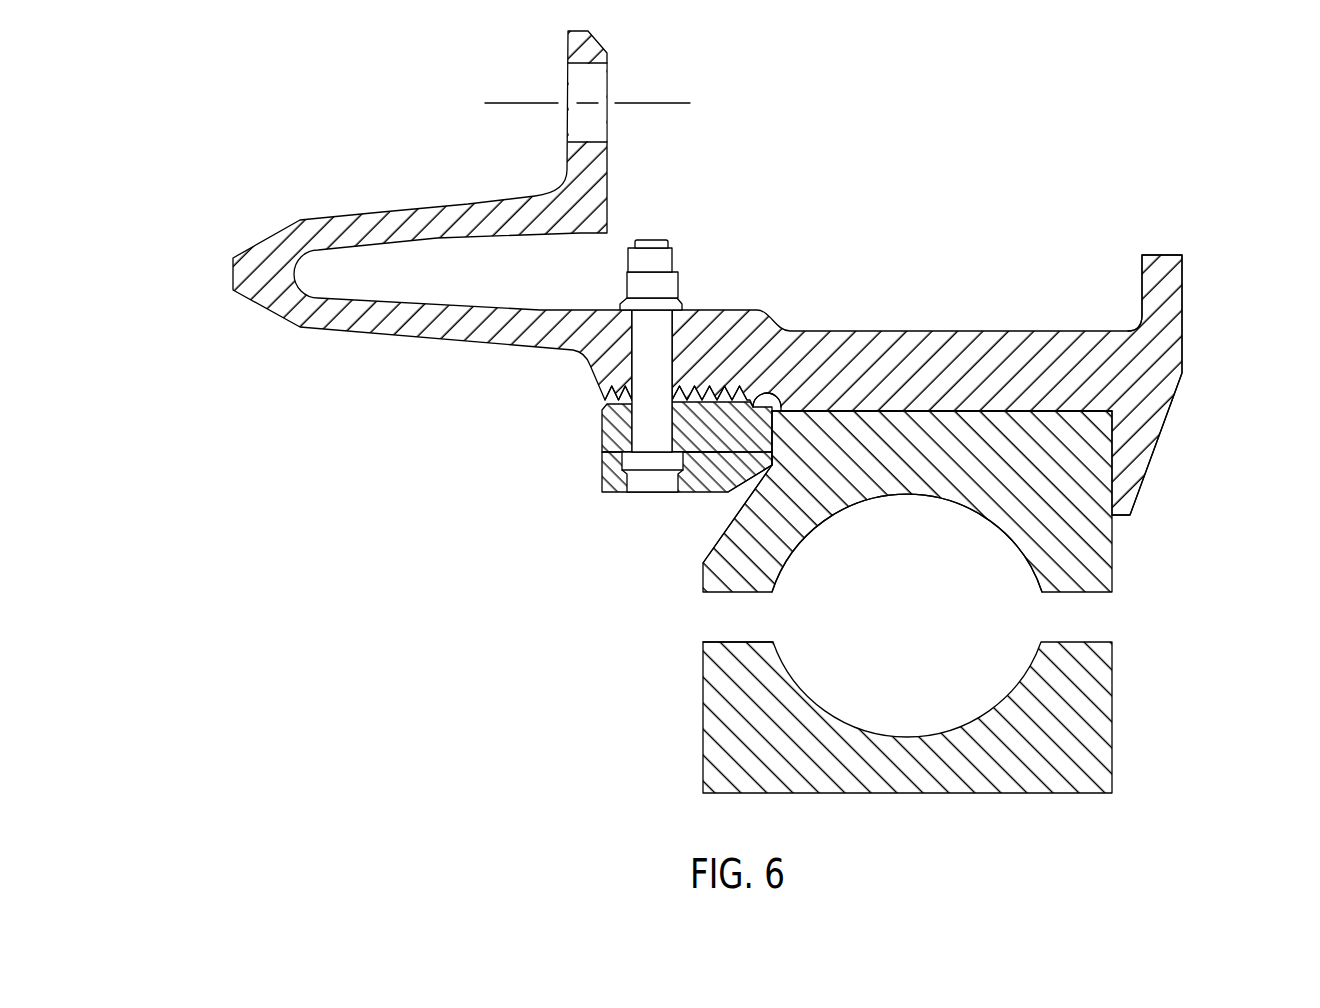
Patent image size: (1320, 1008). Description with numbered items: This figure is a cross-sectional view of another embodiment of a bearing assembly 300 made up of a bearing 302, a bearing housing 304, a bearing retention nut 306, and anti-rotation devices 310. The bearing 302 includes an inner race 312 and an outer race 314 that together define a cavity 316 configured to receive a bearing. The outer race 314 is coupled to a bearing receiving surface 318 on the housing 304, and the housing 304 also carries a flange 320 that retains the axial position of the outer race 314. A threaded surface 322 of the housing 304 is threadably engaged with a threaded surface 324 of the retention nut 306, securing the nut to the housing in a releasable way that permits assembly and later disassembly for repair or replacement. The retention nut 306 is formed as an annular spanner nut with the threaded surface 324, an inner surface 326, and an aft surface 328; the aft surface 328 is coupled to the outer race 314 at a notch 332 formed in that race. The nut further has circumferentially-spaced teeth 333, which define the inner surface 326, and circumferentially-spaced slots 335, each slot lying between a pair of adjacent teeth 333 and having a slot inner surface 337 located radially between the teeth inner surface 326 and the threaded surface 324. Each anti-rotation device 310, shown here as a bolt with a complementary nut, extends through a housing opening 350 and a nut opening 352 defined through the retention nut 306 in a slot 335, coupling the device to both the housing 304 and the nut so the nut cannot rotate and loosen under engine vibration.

The bearing assembly 300 is at (661, 273).
The bearing 302 is at (960, 602).
The bearing housing 304 is at (730, 273).
The bearing retention nut 306 is at (740, 438).
The anti-rotation device 310 is at (678, 262).
The inner race 312 is at (1085, 744).
The outer race 314 is at (912, 507).
The cavity 316 is at (983, 636).
The bearing receiving surface 318 is at (1020, 412).
The flange 320 is at (1132, 443).
The threaded surface 322 is at (700, 388).
The threaded surface 324 is at (760, 322).
The inner surface 326 is at (700, 456).
The aft surface 328 is at (772, 442).
The notch 332 is at (790, 545).
The teeth 333 is at (718, 476).
The slots 335 is at (603, 483).
The slot inner surface 337 is at (688, 454).
The housing opening 350 is at (628, 332).
The nut opening 352 is at (630, 433).